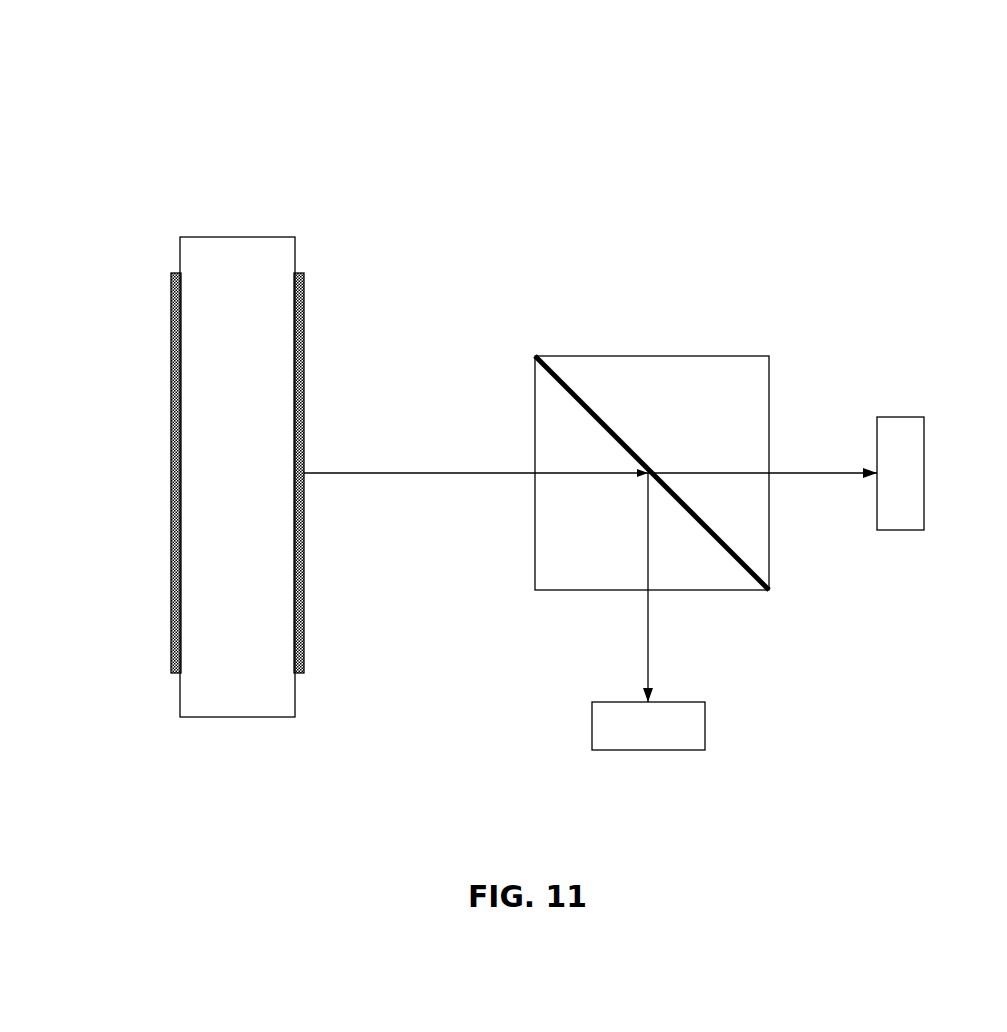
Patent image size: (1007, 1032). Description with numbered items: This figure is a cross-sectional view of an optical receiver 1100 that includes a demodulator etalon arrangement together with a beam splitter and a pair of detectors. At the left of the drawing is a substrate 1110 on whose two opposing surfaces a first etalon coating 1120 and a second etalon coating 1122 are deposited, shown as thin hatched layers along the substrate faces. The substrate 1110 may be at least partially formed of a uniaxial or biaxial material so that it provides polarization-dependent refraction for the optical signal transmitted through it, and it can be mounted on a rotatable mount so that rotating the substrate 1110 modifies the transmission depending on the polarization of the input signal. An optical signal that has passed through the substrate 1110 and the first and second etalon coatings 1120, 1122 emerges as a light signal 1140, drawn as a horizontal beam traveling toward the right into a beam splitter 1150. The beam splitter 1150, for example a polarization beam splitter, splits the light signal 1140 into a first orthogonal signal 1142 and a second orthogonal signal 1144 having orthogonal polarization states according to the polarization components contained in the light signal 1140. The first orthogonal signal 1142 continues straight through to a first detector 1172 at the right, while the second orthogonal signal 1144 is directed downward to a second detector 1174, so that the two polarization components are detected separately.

The optical receiver 1100 is at (135, 128).
The substrate 1110 is at (237, 237).
The first etalon coating 1120 is at (171, 358).
The second etalon coating 1122 is at (304, 315).
The light signal 1140 is at (395, 473).
The first orthogonal signal 1142 is at (817, 473).
The second orthogonal signal 1144 is at (648, 653).
The beam splitter 1150 is at (652, 356).
The first detector 1172 is at (924, 437).
The second detector 1174 is at (700, 735).